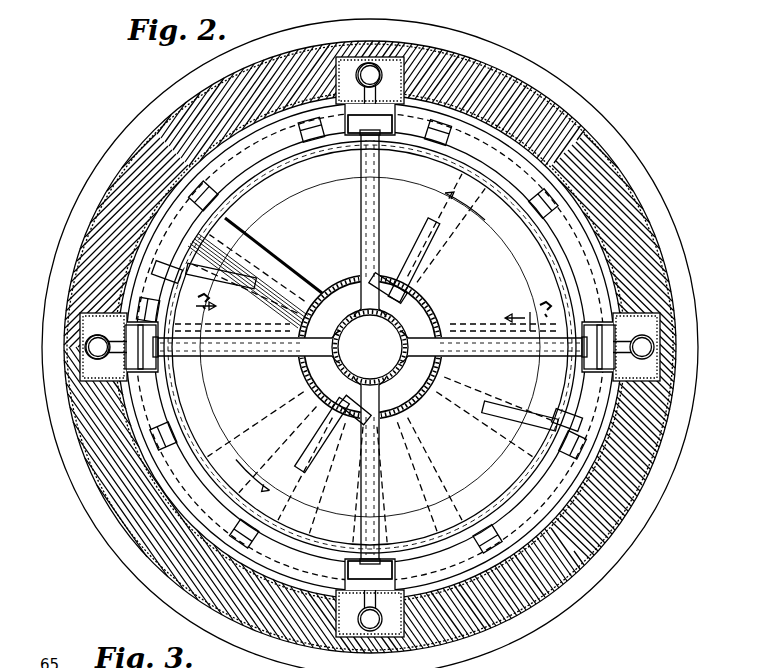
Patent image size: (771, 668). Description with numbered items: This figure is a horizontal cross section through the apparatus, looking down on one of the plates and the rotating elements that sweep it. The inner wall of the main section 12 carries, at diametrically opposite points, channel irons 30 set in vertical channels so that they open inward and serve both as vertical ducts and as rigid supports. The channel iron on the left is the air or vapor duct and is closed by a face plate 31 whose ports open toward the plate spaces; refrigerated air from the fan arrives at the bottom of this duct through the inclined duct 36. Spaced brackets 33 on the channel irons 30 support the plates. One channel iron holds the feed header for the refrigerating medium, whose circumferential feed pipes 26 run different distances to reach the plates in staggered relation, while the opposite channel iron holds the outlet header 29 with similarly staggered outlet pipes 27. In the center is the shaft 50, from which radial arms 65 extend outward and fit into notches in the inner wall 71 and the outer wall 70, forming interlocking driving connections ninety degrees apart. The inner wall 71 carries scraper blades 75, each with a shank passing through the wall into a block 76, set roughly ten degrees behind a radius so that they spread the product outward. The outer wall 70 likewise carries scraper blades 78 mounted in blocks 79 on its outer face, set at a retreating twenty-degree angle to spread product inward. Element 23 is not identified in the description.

The main section 12 is at (637, 247).
The blade plate 23 is at (255, 273).
The feed pipes 26 is at (185, 505).
The outlet pipes 27 is at (250, 142).
The outlet header 29 is at (362, 62).
The channel iron 30 is at (400, 73).
The face plate 31 is at (67, 363).
The brackets 33 is at (340, 110).
The inclined duct 36 is at (87, 340).
The shaft 50 is at (348, 323).
The radial arms 65 is at (381, 152).
The outer wall 70 is at (537, 243).
The inner wall 71 is at (433, 315).
The scraper blades 75 is at (417, 233).
The block 76 is at (400, 292).
The scraper blades 78 is at (255, 284).
The blocks 79 is at (172, 265).